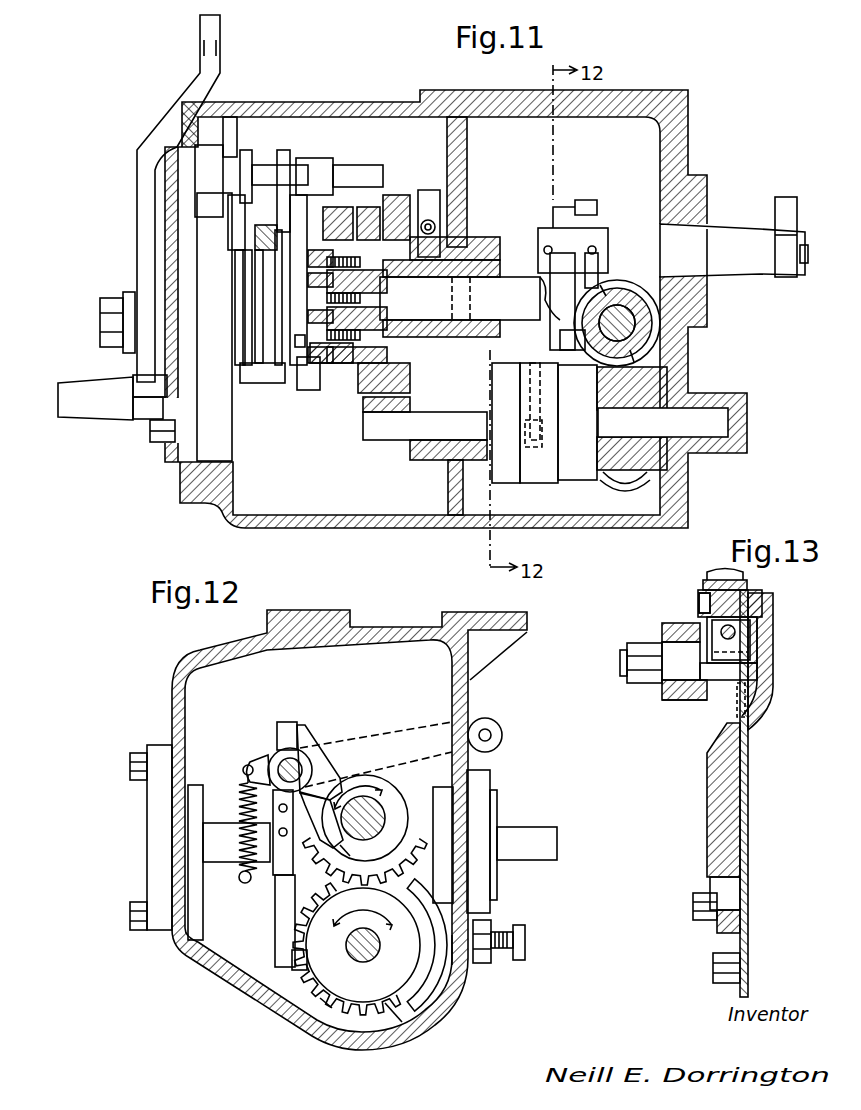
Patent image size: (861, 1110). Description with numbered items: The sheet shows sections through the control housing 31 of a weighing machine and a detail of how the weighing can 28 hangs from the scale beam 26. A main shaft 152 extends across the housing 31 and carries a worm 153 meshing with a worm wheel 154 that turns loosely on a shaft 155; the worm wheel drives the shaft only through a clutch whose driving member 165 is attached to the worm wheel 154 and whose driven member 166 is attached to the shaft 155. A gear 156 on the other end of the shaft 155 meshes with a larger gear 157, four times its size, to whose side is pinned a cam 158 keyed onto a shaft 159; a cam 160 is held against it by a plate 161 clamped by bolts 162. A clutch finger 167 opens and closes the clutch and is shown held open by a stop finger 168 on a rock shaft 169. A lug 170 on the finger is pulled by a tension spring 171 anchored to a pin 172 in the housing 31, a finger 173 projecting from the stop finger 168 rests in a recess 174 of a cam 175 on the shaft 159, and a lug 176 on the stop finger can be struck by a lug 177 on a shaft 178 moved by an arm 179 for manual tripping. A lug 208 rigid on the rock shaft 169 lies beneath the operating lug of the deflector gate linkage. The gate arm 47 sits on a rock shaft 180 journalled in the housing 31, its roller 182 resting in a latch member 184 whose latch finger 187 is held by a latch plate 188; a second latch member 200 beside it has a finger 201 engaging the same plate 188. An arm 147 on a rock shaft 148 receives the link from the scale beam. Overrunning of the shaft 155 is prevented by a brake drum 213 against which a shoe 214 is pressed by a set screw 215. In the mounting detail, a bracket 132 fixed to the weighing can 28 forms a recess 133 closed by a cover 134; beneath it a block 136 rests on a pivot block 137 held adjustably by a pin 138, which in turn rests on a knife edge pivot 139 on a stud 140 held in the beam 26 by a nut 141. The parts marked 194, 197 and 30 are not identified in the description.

In FIG. 11, the arm 47 is at (140, 172).
In FIG. 11, the latch member 184 is at (255, 162).
In FIG. 11, the latch member 200 is at (284, 173).
In FIG. 11, the gear 157 is at (396, 193).
In FIG. 11, the lug 208 is at (440, 198).
In FIG. 11, the cam 160 is at (330, 220).
In FIG. 11, the plate 161 is at (300, 424).
In FIG. 11, the shaft 159 is at (472, 288).
In FIG. 12, the shaft 159 is at (380, 804).
In FIG. 11, the lug 176 is at (557, 212).
In FIG. 12, the lug 176 is at (306, 730).
In FIG. 11, the lug 177 is at (585, 203).
In FIG. 12, the lug 177 is at (287, 720).
In FIG. 11, the arm 179 is at (786, 200).
In FIG. 12, the arm 179 is at (488, 718).
In FIG. 11, the shaft 178 is at (803, 270).
In FIG. 11, the roller 182 is at (250, 205).
In FIG. 11, the seal 194 is at (258, 240).
In FIG. 11, the finger 201 is at (275, 303).
In FIG. 11, the latch finger 187 is at (248, 322).
In FIG. 11, the bolts 162 is at (297, 340).
In FIG. 11, the finger 173 is at (568, 300).
In FIG. 12, the finger 173 is at (318, 828).
In FIG. 11, the worm 153 is at (655, 320).
In FIG. 12, the worm 153 is at (340, 870).
In FIG. 11, the main shaft 152 is at (625, 338).
In FIG. 12, the main shaft 152 is at (522, 828).
In FIG. 11, the cam 175 is at (562, 340).
In FIG. 12, the cam 175 is at (375, 785).
In FIG. 11, the shaft 155 is at (700, 407).
In FIG. 12, the shaft 155 is at (366, 952).
In FIG. 11, the rock shaft 180 is at (100, 322).
In FIG. 11, the arm 147 is at (95, 412).
In FIG. 11, the rock shaft 148 is at (140, 425).
In FIG. 11, the latch plate 188 is at (262, 385).
In FIG. 11, the collar 197 is at (315, 388).
In FIG. 11, the cam 158 is at (360, 395).
In FIG. 11, the gear 156 is at (392, 452).
In FIG. 11, the stop finger 168 is at (545, 405).
In FIG. 12, the stop finger 168 is at (280, 912).
In FIG. 11, the clutch finger 167 is at (545, 437).
In FIG. 12, the clutch finger 167 is at (295, 972).
In FIG. 11, the driven member 166 is at (518, 470).
In FIG. 12, the driven member 166 is at (325, 1002).
In FIG. 11, the driving member 165 is at (575, 483).
In FIG. 11, the worm wheel 154 is at (622, 482).
In FIG. 12, the worm wheel 154 is at (335, 1012).
In FIG. 11, the brake drum 213 is at (508, 487).
In FIG. 12, the brake drum 213 is at (404, 1024).
In FIG. 11, the housing 31 is at (370, 523).
In FIG. 12, the housing 31 is at (445, 982).
In FIG. 12, the housing 30 is at (455, 612).
In FIG. 12, the rock shaft 169 is at (286, 762).
In FIG. 12, the lug 170 is at (258, 760).
In FIG. 12, the recess 174 is at (348, 853).
In FIG. 12, the tension spring 171 is at (238, 860).
In FIG. 12, the pin 172 is at (247, 884).
In FIG. 12, the shoe 214 is at (440, 1000).
In FIG. 12, the set screw 215 is at (526, 940).
In FIG. 13, the block 136 is at (700, 612).
In FIG. 13, the cover 134 is at (764, 600).
In FIG. 13, the stud 140 is at (668, 652).
In FIG. 13, the pivot block 137 is at (758, 636).
In FIG. 13, the pin 138 is at (736, 640).
In FIG. 13, the recess 133 is at (772, 675).
In FIG. 13, the nut 141 is at (637, 684).
In FIG. 13, the scale beam 26 is at (688, 702).
In FIG. 13, the knife edge pivot 139 is at (722, 680).
In FIG. 13, the bracket 132 is at (715, 750).
In FIG. 13, the weighing can 28 is at (749, 810).